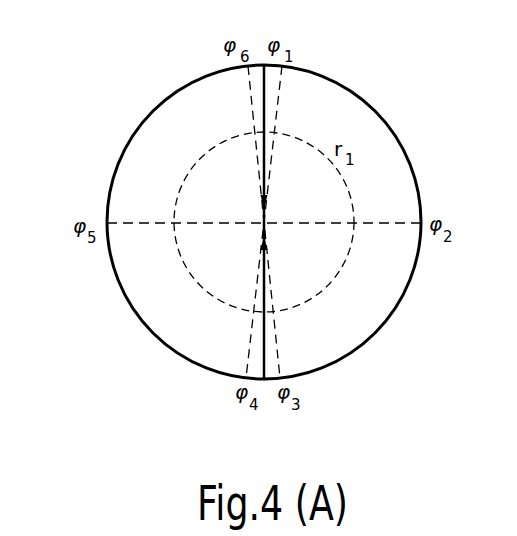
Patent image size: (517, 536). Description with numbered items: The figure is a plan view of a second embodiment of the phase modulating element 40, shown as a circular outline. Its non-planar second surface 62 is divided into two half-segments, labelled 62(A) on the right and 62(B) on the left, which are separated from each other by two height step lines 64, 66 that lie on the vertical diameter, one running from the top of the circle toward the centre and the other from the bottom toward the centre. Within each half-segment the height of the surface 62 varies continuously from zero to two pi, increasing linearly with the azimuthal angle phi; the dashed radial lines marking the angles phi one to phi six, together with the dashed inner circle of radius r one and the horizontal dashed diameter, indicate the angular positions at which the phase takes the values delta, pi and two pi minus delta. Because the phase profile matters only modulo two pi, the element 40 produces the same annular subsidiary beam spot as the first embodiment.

The phase modulating element 40 is at (375, 114).
The non-planar second surface 62 is at (146, 315).
The height step line 64 is at (267, 102).
The height step line 66 is at (267, 345).